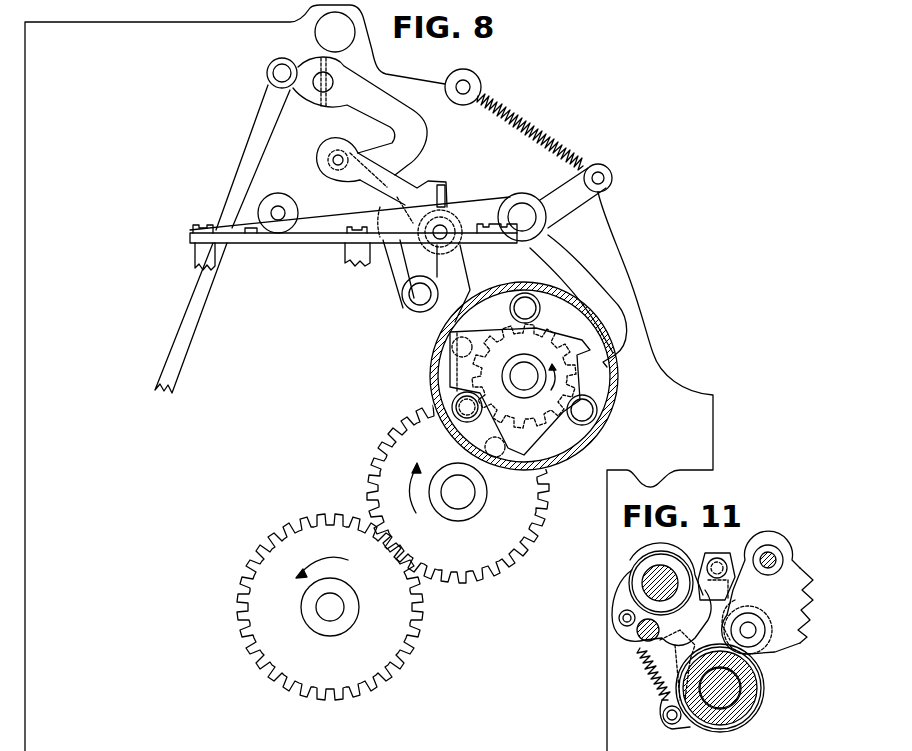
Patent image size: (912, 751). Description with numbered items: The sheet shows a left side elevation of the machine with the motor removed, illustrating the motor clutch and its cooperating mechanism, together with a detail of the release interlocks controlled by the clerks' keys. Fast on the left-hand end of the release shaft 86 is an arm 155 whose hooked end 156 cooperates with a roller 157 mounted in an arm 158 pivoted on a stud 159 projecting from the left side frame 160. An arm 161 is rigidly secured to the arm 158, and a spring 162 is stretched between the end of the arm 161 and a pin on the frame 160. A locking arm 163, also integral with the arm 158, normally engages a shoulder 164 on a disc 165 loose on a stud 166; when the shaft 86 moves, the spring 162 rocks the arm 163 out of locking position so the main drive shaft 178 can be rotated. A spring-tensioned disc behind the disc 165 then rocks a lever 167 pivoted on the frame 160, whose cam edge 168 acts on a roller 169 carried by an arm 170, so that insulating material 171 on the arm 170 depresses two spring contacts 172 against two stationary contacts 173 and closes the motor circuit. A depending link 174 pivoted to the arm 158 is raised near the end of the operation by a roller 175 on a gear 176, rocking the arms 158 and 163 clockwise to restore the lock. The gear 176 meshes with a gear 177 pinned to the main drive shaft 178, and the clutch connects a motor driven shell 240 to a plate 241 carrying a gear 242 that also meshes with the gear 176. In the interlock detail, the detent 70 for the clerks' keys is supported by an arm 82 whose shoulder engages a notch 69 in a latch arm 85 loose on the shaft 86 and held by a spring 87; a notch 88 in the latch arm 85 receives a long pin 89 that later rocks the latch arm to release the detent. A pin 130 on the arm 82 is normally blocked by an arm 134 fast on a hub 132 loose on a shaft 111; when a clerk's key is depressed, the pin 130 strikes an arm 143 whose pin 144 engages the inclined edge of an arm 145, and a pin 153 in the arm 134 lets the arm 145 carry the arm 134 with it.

In FIG. 8, the shaft 86 is at (318, 98).
In FIG. 11, the shaft 86 is at (652, 565).
In FIG. 8, the arm 155 is at (383, 122).
In FIG. 8, the hooked end 156 is at (412, 152).
In FIG. 8, the roller 157 is at (331, 152).
In FIG. 8, the arm 158 is at (405, 178).
In FIG. 8, the stud 159 is at (518, 196).
In FIG. 8, the left side frame 160 is at (614, 236).
In FIG. 8, the arm 161 is at (566, 205).
In FIG. 8, the spring 162 is at (565, 152).
In FIG. 8, the locking arm 163 is at (618, 298).
In FIG. 8, the shoulder 164 is at (608, 354).
In FIG. 8, the disc 165 is at (603, 380).
In FIG. 8, the stud 166 is at (540, 358).
In FIG. 8, the lever 167 is at (400, 280).
In FIG. 8, the cam edge 168 is at (420, 247).
In FIG. 8, the roller 169 is at (450, 225).
In FIG. 8, the arm 170 is at (318, 200).
In FIG. 8, the insulating material 171 is at (449, 185).
In FIG. 8, the spring contacts 172 is at (477, 197).
In FIG. 8, the stationary contacts 173 is at (506, 249).
In FIG. 8, the link 174 is at (465, 277).
In FIG. 8, the roller 175 is at (498, 470).
In FIG. 8, the gear 176 is at (545, 510).
In FIG. 8, the gear 177 is at (423, 606).
In FIG. 8, the main drive shaft 178 is at (342, 606).
In FIG. 8, the motor driven shell 240 is at (606, 410).
In FIG. 8, the plate 241 is at (447, 373).
In FIG. 8, the gear 242 is at (516, 329).
In FIG. 11, the notch 69 is at (761, 625).
In FIG. 11, the detent 70 is at (797, 632).
In FIG. 11, the arm 82 is at (741, 553).
In FIG. 11, the latch arm 85 is at (622, 582).
In FIG. 11, the spring 87 is at (646, 680).
In FIG. 11, the notch 88 is at (638, 640).
In FIG. 11, the pin 89 is at (645, 650).
In FIG. 11, the shaft 111 is at (756, 713).
In FIG. 11, the pin 130 is at (730, 560).
In FIG. 11, the hub 132 is at (742, 690).
In FIG. 11, the arm 134 is at (665, 695).
In FIG. 11, the arm 143 is at (696, 572).
In FIG. 11, the pin 144 is at (736, 594).
In FIG. 11, the arm 145 is at (750, 666).
In FIG. 11, the pin 153 is at (688, 645).